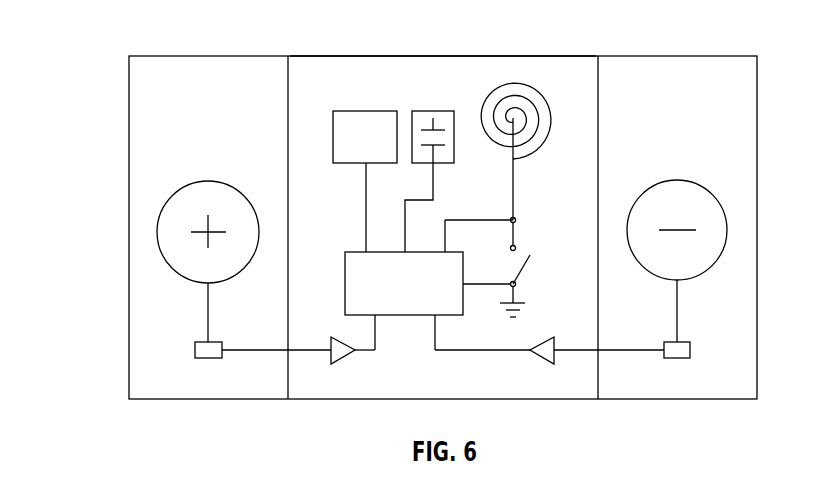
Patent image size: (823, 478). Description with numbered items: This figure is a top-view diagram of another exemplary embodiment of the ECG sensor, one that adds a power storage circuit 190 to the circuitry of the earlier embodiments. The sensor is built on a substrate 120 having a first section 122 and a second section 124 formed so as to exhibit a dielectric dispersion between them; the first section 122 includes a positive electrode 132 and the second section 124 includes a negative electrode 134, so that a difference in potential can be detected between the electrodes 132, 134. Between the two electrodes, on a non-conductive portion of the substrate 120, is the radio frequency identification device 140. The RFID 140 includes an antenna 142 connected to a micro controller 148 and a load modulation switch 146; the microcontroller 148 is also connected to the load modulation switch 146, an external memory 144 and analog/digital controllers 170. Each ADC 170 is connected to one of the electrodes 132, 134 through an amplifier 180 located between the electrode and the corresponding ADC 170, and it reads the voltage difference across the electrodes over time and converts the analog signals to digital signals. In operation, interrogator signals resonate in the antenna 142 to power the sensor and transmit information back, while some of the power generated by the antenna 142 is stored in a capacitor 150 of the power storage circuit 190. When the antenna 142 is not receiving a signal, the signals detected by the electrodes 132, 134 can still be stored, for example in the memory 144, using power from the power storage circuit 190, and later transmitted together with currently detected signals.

The substrate 120 is at (126, 100).
The first section 122 is at (168, 56).
The second section 124 is at (722, 56).
The radio frequency identification device (RFID) 140 is at (548, 25).
The positive electrode 132 is at (207, 181).
The negative electrode 134 is at (677, 180).
The amplifier 180 is at (197, 342).
The analog/digital controller (ADC) 170 is at (340, 362).
The micro controller 148 is at (347, 252).
The external memory 144 is at (357, 111).
The power storage circuit 190 is at (433, 111).
The capacitor 150 is at (454, 140).
The antenna 142 is at (525, 148).
The load modulation switch 146 is at (531, 228).